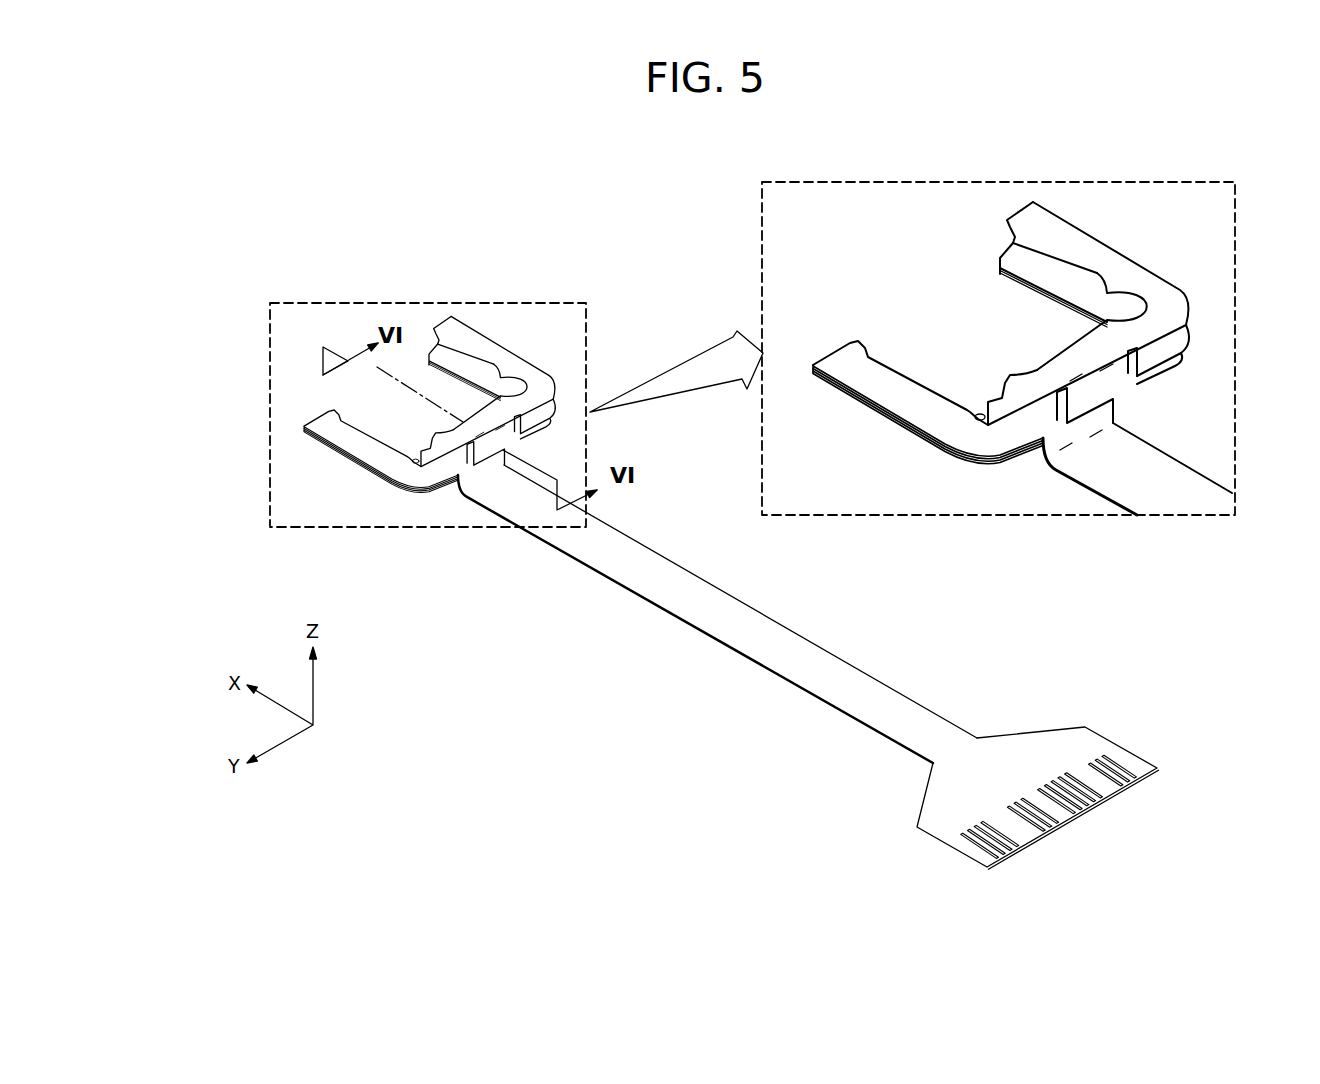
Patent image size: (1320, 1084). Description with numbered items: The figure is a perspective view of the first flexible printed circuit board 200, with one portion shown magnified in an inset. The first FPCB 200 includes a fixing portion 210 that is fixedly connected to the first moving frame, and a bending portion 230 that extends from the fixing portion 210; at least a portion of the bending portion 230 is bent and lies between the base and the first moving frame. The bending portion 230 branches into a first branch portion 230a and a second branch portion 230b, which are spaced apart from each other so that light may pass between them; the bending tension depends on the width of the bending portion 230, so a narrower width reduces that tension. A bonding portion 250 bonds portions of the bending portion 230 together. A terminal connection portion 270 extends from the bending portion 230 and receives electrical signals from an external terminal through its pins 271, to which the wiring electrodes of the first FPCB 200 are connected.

The first flexible printed circuit board 200 is at (287, 250).
The fixing portion 210 is at (502, 355).
The bending portion 230 is at (349, 444).
The first branch portion 230a is at (370, 457).
The second branch portion 230b is at (468, 368).
The bonding portion 250 is at (332, 437).
The terminal connection portion 270 is at (1065, 740).
The pins 271 is at (972, 832).